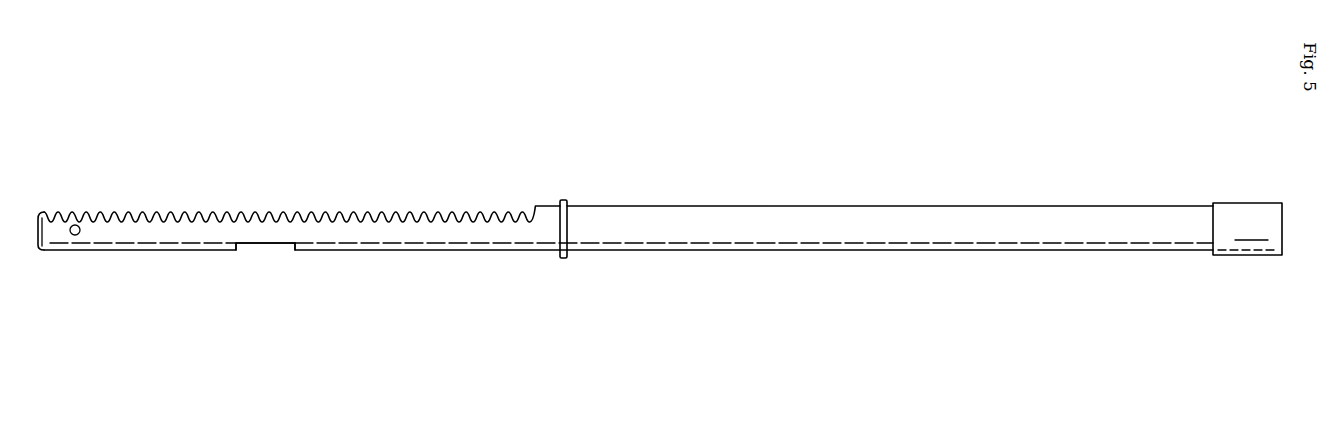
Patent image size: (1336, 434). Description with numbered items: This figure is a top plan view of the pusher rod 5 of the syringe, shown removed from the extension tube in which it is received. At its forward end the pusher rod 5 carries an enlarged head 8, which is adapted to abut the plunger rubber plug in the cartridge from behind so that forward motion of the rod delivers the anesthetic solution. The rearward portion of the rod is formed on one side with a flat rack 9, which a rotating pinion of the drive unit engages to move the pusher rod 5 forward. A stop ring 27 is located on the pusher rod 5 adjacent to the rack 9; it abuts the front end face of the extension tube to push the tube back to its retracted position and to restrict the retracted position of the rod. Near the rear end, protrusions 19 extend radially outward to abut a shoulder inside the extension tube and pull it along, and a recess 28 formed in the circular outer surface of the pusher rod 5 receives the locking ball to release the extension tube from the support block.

The pusher rod 5 is at (660, 218).
The flat rack 9 is at (352, 210).
The protrusions 19 is at (75, 235).
The recess 28 is at (260, 250).
The stop ring 27 is at (564, 200).
The enlarged head 8 is at (1245, 212).